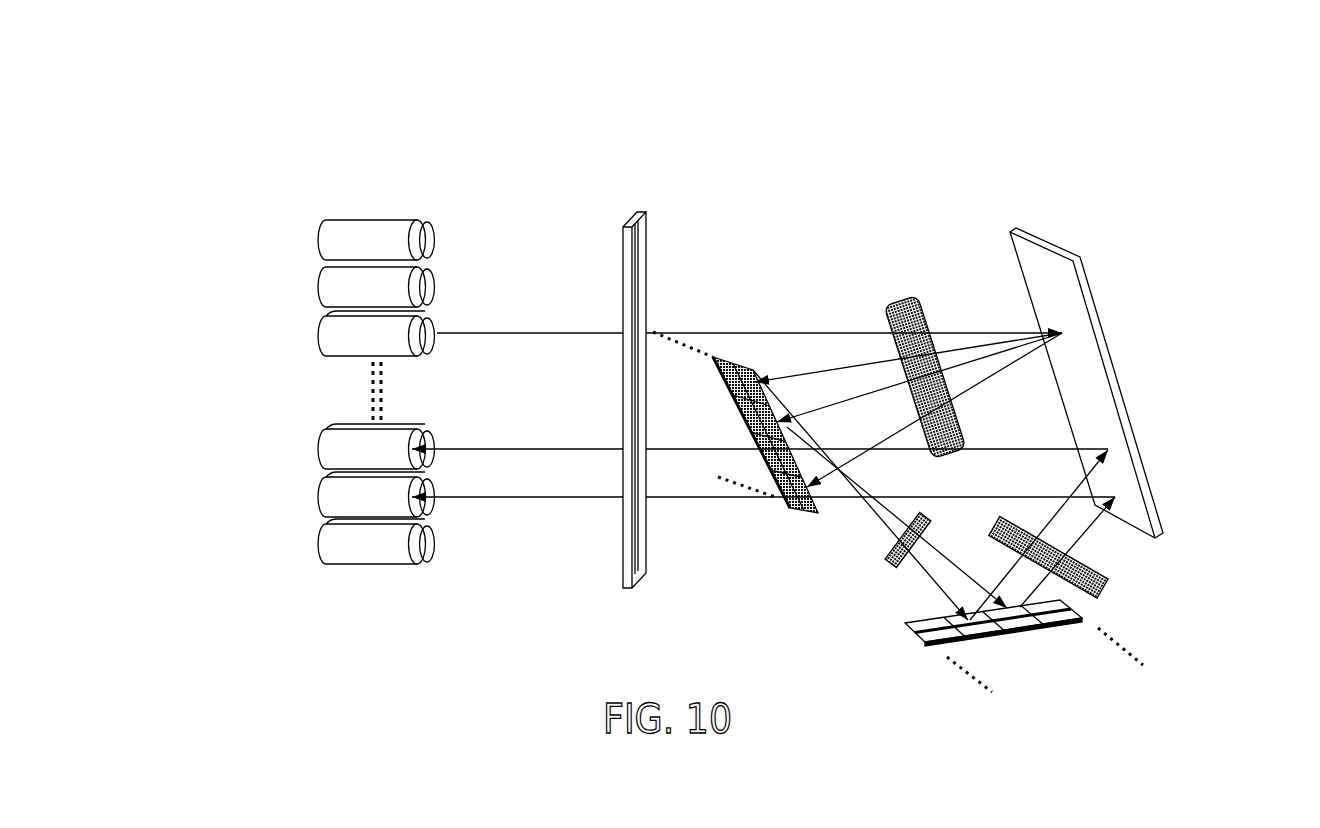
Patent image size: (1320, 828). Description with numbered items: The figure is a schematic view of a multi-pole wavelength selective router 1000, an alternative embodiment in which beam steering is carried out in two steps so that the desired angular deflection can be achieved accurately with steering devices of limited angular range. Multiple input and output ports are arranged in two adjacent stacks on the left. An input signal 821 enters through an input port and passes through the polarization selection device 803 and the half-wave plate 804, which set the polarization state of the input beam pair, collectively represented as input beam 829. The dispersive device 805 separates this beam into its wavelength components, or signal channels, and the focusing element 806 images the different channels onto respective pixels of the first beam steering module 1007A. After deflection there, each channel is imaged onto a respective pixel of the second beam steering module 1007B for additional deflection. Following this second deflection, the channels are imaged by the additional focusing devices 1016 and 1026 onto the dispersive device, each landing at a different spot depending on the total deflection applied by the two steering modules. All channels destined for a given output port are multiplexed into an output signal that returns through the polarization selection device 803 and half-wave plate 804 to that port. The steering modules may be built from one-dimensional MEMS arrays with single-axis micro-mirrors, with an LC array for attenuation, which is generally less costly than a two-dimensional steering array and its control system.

The multi-pole wavelength selective router 1000 is at (836, 88).
The input signal 821 is at (538, 333).
The input beam pair 829 is at (825, 332).
The polarization selection device 803 is at (632, 224).
The half-wave plate 804 is at (648, 220).
The dispersive device 805 is at (1050, 248).
The focusing element 806 is at (898, 298).
The second beam steering module 1007B is at (787, 502).
The first beam steering module 1007A is at (1093, 617).
The focusing device 1026 is at (890, 560).
The focusing device 1016 is at (1095, 578).